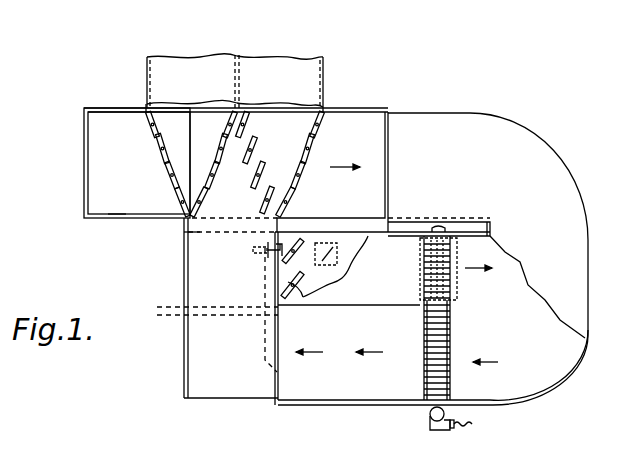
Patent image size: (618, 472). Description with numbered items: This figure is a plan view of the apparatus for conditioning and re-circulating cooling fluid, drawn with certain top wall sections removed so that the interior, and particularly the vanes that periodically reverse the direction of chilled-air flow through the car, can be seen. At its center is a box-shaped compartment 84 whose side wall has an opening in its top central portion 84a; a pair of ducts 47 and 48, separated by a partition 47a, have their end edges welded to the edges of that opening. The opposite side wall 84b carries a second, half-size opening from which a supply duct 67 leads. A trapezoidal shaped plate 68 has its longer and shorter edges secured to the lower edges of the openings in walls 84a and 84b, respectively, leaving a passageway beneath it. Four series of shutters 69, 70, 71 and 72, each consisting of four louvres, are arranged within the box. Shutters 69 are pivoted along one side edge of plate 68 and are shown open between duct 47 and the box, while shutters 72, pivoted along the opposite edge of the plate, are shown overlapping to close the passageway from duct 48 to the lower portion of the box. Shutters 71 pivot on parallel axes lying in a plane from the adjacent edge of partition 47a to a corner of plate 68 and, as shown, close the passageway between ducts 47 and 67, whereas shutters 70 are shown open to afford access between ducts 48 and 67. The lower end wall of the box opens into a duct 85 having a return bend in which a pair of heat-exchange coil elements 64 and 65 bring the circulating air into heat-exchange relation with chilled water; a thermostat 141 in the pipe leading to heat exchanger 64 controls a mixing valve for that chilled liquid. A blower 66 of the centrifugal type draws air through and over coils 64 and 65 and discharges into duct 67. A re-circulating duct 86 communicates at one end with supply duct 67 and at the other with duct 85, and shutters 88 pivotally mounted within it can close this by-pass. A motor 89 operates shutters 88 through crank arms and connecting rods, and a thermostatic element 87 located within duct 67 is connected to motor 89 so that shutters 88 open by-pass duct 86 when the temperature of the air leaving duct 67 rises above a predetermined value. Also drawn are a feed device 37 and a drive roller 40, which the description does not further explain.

The feed device 37 is at (446, 228).
The drive roller 40 is at (432, 430).
The duct 47 is at (187, 56).
The partition 47a is at (237, 54).
The duct 48 is at (286, 61).
The heat-exchange coil element 64 is at (451, 335).
The heat-exchange coil element 65 is at (420, 258).
The blower 66 is at (192, 356).
The duct 67 is at (236, 271).
The trapezoidal shaped plate 68 is at (160, 140).
The shutters 69 is at (164, 148).
The shutters 70 is at (256, 146).
The shutters 71 is at (196, 203).
The shutters 72 is at (352, 144).
The box-shaped compartment 84 is at (130, 199).
The top central portion of side wall 84a is at (146, 107).
The side wall 84b is at (115, 220).
The duct 85 is at (433, 249).
The re-circulating duct 86 is at (394, 289).
The thermostatic element 87 is at (260, 266).
The shutters 88 is at (303, 298).
The motor 89 is at (326, 270).
The thermostat 141 is at (472, 424).